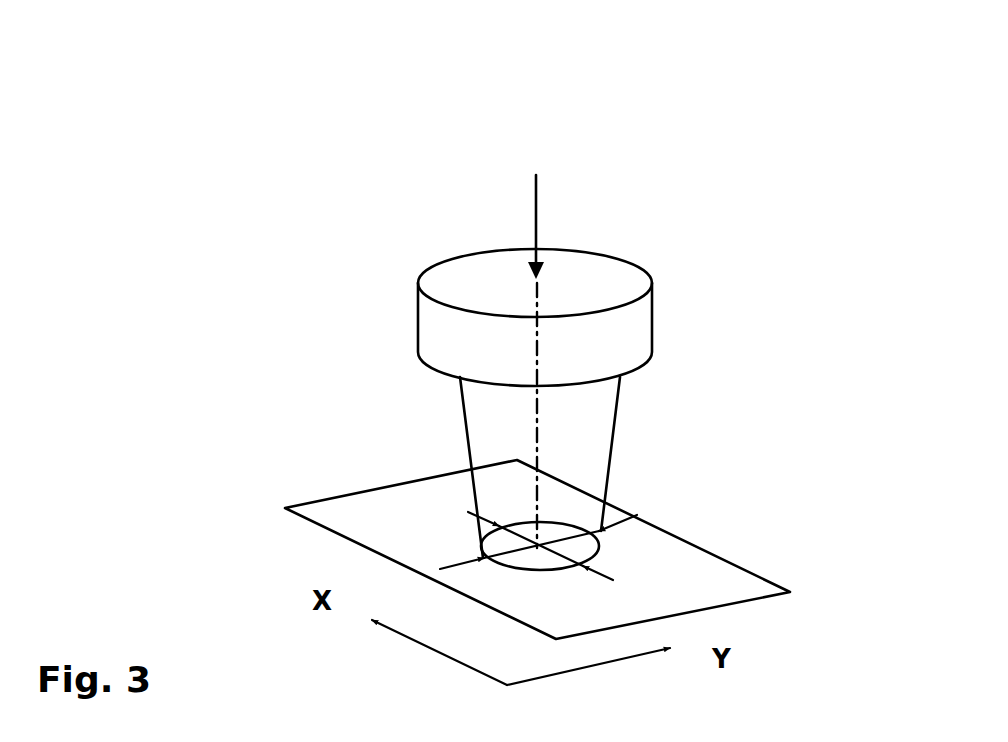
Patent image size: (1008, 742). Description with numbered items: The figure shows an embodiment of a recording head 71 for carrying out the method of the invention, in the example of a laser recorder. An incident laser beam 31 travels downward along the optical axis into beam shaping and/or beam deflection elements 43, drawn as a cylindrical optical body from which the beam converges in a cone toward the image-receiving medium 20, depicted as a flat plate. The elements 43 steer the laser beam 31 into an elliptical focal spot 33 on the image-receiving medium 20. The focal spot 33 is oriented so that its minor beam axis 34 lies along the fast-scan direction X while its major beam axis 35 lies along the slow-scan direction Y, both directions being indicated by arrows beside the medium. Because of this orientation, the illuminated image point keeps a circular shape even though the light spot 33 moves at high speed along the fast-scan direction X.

The recording head 71 is at (382, 176).
The laser beam 31 is at (536, 222).
The beam shaping and/or beam deflection elements 43 is at (625, 332).
The image-receiving medium 20 is at (713, 587).
The elliptical focal spot 33 is at (528, 560).
The minor beam axis 34 is at (613, 580).
The major beam axis 35 is at (478, 572).